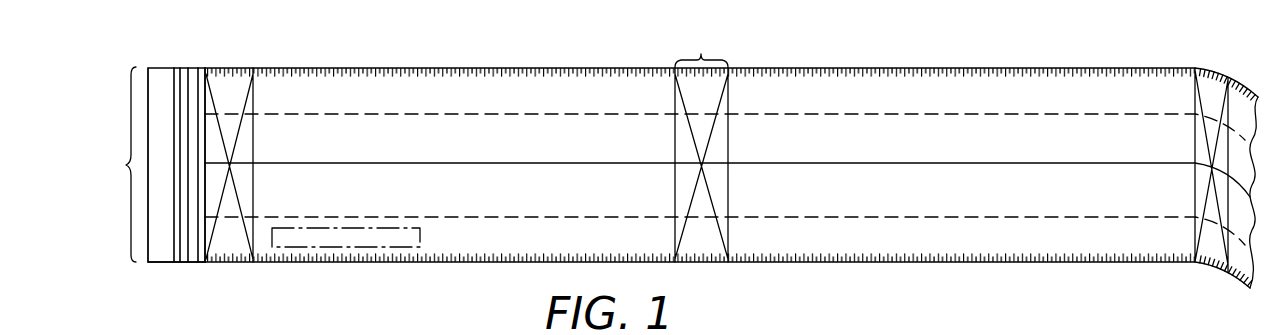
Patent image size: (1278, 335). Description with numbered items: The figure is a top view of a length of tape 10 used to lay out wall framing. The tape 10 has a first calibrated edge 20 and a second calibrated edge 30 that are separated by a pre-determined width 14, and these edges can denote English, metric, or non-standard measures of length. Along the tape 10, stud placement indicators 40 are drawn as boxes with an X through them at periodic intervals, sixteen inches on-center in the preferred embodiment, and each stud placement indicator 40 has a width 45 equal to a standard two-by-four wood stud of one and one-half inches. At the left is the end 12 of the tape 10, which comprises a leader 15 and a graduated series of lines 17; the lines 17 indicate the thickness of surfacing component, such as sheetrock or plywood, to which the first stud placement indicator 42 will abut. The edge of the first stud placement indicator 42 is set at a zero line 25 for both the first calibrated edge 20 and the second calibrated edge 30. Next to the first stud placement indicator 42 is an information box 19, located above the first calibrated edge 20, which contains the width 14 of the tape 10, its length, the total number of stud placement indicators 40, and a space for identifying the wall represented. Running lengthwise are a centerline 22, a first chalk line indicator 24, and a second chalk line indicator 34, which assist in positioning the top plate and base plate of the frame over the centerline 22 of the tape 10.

The tape 10 is at (466, 52).
The end 12 is at (147, 238).
The width 14 is at (145, 164).
The leader 15 is at (188, 277).
The graduated series of lines 17 is at (181, 67).
The information box 19 is at (388, 247).
The first calibrated edge 20 is at (335, 262).
The centerline 22 is at (597, 167).
The first chalk line indicator 24 is at (548, 218).
The zero line 25 is at (207, 227).
The second calibrated edge 30 is at (592, 67).
The second chalk line indicator 34 is at (573, 117).
The stud placement indicator 40 is at (693, 263).
The first stud placement indicator 42 is at (227, 67).
The width 45 is at (701, 42).